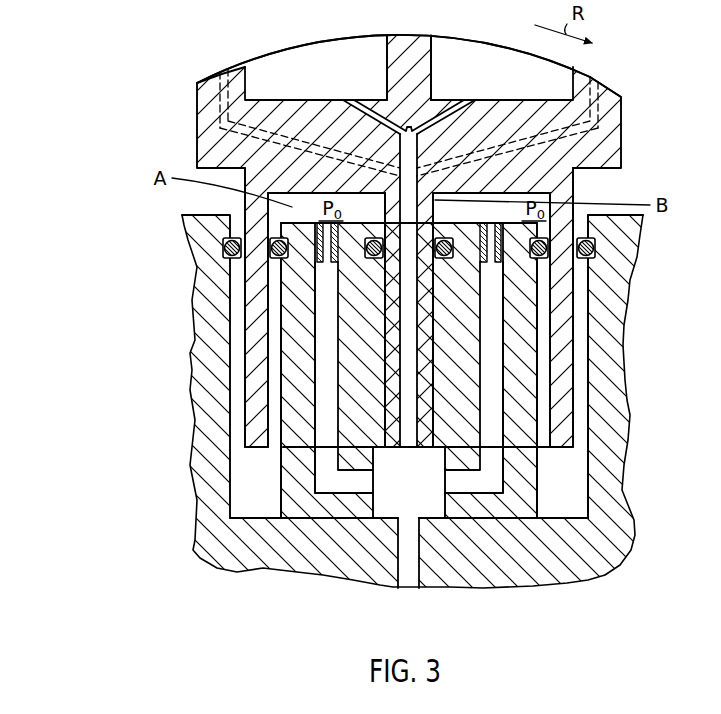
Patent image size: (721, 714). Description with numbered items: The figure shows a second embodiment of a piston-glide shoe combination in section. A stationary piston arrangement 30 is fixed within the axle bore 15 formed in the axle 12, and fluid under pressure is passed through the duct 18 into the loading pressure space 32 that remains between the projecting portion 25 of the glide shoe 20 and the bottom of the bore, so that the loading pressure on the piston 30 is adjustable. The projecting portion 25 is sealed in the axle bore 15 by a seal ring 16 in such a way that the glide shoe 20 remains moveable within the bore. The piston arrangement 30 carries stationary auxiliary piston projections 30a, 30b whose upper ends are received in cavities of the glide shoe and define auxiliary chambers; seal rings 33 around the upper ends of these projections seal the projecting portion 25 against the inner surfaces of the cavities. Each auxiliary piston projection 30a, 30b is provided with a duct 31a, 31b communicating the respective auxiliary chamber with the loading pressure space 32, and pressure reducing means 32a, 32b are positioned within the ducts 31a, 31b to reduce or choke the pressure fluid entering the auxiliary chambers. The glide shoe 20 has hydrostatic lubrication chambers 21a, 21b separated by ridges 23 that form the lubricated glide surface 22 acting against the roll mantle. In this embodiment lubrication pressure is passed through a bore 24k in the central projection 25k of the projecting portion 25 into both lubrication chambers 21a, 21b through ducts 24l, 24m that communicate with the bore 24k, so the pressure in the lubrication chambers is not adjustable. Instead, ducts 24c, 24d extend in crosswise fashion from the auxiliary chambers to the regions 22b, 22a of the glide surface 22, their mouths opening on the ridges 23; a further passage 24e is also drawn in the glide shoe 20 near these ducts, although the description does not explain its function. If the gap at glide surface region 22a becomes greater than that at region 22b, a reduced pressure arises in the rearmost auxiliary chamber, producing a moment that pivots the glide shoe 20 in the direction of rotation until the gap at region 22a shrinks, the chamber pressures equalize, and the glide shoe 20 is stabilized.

The axle 12 is at (614, 347).
The axle bore 15 is at (584, 492).
The seal ring 16 is at (226, 250).
The duct 18 is at (407, 578).
The glide shoe 20 is at (624, 162).
The hydrostatic lubrication chamber 21a is at (288, 69).
The hydrostatic lubrication chamber 21b is at (474, 55).
The glide surface 22 is at (507, 49).
The glide surface region 22a is at (232, 66).
The glide surface region 22b is at (610, 86).
The ridge 23 is at (407, 51).
The duct 24c is at (220, 107).
The duct 24d is at (603, 130).
The passage 24e is at (222, 72).
The bore 24k is at (407, 418).
The duct 24l is at (362, 114).
The duct 24m is at (463, 110).
The projecting portion 25 is at (257, 299).
The central projection 25k is at (423, 388).
The loading piston 30 is at (520, 512).
The auxiliary piston projection 30a is at (298, 403).
The auxiliary piston projection 30b is at (525, 474).
The duct 31a is at (327, 349).
The duct 31b is at (490, 463).
The loading pressure space 32 is at (388, 512).
The pressure reducing means 32a is at (280, 204).
The pressure reducing means 32b is at (490, 228).
The seal ring 33 is at (526, 238).